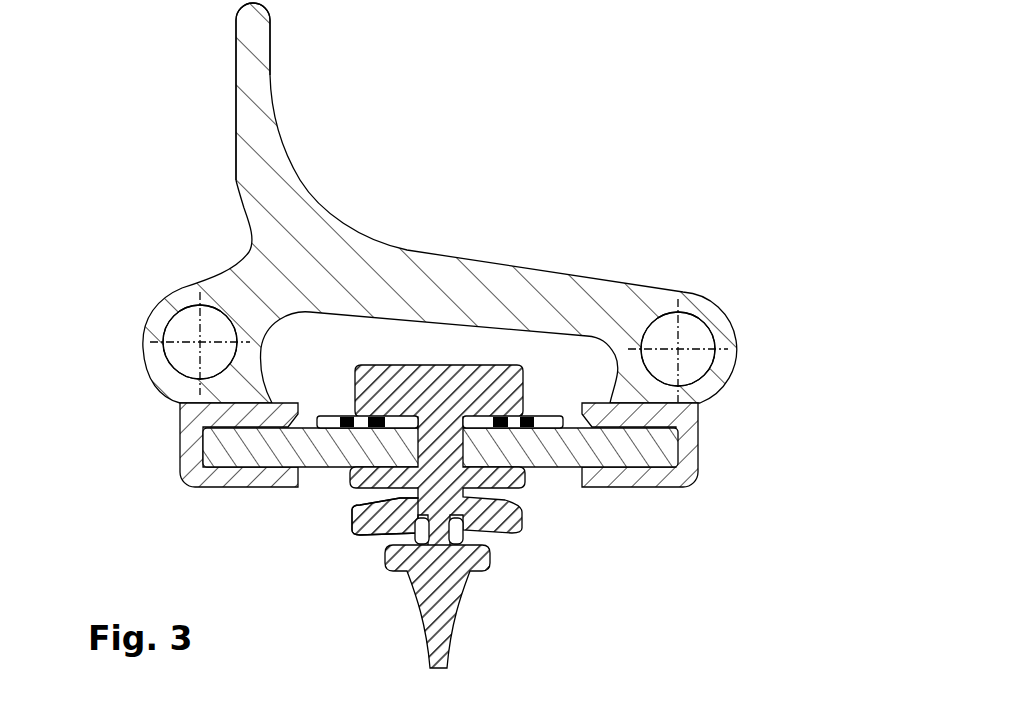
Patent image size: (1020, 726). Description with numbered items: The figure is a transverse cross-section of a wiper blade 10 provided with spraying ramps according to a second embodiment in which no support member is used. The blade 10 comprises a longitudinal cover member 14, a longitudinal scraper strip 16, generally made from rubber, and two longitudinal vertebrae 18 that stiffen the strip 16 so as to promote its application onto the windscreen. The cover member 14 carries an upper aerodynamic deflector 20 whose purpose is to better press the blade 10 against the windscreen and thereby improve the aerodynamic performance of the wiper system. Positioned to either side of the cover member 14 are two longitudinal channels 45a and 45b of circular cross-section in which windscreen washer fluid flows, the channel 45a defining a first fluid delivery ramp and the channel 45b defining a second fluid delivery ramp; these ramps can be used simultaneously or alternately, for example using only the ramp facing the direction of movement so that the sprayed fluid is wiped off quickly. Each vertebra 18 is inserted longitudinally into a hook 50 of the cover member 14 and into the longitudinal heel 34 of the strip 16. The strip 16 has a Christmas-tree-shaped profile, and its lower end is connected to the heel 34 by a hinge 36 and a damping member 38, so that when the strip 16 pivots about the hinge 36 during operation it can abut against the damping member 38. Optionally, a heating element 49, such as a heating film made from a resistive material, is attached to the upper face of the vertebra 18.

The blade 10 is at (397, 118).
The longitudinal cover member 14 is at (497, 260).
The upper aerodynamic deflector 20 is at (258, 82).
The channel 45a is at (165, 327).
The channel 45b is at (692, 332).
The heating element 49 is at (325, 417).
The longitudinal heel 34 is at (449, 365).
The longitudinal vertebra 18 is at (253, 455).
The hook 50 is at (213, 482).
The damping member 38 is at (350, 515).
The hinge 36 is at (418, 535).
The longitudinal scraper strip 16 is at (418, 652).